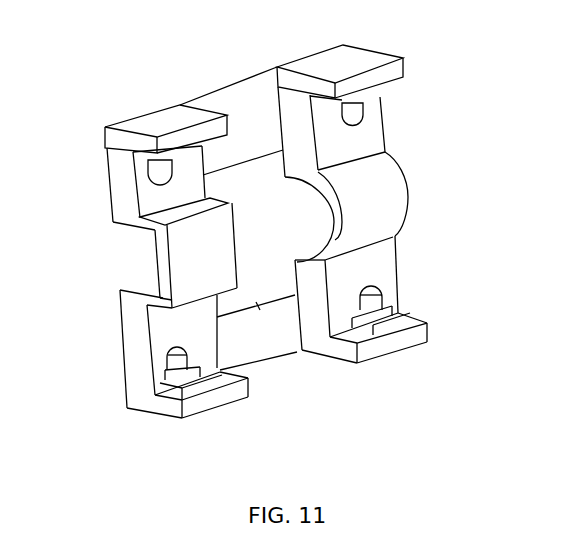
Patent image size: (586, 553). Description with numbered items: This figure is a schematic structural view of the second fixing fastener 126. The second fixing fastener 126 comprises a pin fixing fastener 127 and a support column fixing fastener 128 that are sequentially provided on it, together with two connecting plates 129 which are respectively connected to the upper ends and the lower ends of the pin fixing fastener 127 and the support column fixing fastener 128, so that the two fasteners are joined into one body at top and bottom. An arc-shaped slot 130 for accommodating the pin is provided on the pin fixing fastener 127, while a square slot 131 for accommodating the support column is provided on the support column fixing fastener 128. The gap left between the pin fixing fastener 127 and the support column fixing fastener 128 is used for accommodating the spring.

The second fixing fastener 126 is at (308, 402).
The pin fixing fastener 127 is at (110, 177).
The support column fixing fastener 128 is at (393, 197).
The connecting plates 129 is at (242, 102).
The arc-shaped slot 130 is at (138, 260).
The square slot 131 is at (317, 222).